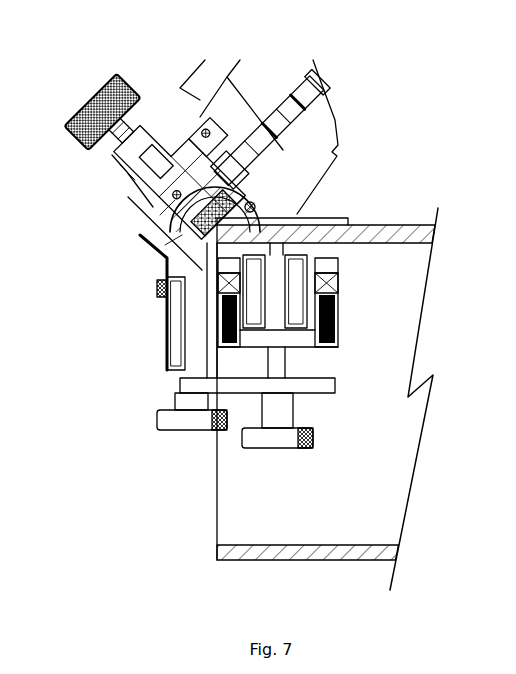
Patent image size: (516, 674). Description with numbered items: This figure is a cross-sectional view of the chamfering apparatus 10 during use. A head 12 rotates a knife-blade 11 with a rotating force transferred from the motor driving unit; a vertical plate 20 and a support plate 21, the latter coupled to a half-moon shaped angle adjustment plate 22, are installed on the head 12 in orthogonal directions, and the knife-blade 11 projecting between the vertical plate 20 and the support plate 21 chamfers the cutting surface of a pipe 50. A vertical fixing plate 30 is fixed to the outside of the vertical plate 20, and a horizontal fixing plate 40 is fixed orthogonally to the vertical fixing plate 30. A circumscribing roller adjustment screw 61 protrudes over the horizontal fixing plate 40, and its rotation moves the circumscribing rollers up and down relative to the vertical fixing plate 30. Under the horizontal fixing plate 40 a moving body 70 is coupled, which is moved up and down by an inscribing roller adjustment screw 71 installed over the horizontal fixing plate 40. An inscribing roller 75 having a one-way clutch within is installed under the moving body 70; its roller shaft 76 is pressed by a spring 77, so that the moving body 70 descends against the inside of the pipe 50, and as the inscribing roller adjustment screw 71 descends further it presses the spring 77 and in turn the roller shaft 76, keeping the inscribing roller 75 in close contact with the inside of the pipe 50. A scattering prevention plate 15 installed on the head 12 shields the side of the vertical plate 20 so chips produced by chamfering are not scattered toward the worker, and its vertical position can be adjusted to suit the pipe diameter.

The chamfering apparatus 10 is at (171, 114).
The knife-blade 11 is at (143, 228).
The head 12 is at (128, 183).
The scattering prevention plate 15 is at (153, 253).
The vertical plate 20 is at (208, 322).
The support plate 21 is at (347, 218).
The half-moon shaped angle adjustment plate 22 is at (265, 112).
The vertical fixing plate 30 is at (173, 362).
The horizontal fixing plate 40 is at (337, 394).
The pipe 50 is at (263, 547).
The circumscribing roller adjustment screw 61 is at (175, 423).
The moving body 70 is at (328, 355).
The inscribing roller adjustment screw 71 is at (270, 442).
The inscribing roller 75 is at (295, 218).
The roller shaft 76 is at (320, 284).
The spring 77 is at (336, 318).